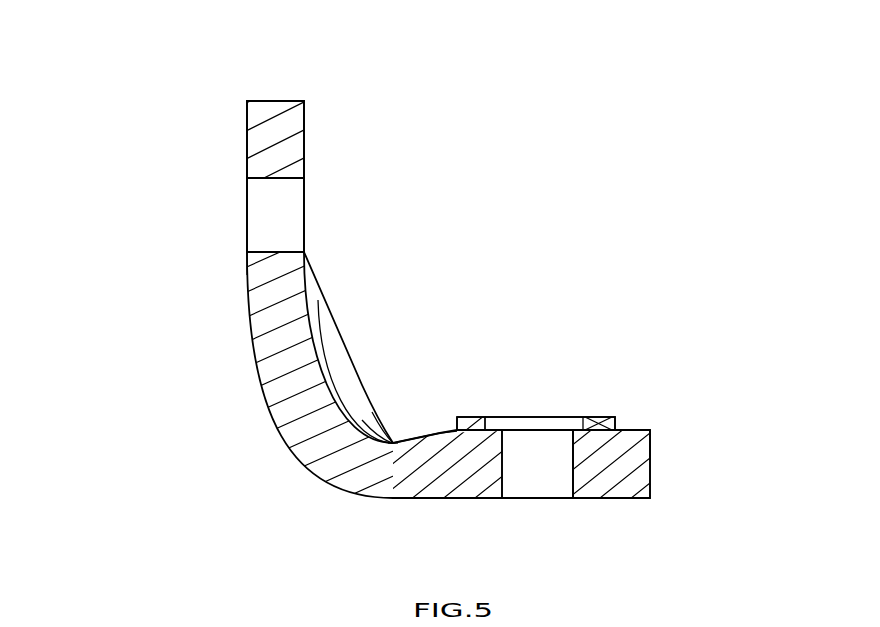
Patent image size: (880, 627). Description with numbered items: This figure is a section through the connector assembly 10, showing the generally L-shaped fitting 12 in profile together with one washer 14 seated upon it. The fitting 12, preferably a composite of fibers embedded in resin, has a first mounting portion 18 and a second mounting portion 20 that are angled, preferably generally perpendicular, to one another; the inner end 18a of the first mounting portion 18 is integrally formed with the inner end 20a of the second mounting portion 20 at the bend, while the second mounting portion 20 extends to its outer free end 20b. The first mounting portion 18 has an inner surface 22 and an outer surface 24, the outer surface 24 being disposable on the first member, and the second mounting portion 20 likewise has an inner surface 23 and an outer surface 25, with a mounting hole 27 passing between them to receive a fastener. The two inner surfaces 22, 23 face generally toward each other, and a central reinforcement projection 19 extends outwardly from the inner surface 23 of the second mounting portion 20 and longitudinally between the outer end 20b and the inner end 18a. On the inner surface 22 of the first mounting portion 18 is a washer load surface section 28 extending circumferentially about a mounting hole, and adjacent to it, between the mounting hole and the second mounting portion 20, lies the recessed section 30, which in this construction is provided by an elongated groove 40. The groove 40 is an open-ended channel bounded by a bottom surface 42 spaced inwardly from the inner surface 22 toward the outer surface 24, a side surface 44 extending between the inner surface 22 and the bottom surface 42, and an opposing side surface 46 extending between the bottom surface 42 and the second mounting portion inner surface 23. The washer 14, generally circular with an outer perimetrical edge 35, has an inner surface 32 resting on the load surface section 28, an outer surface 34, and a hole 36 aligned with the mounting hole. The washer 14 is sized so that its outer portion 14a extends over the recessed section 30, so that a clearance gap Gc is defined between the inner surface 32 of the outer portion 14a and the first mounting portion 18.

The connector assembly 10 is at (637, 236).
The fitting 12 is at (199, 340).
The washer 14 is at (621, 419).
The outer portion of the washer 14a is at (467, 423).
The first mounting portion 18 is at (648, 528).
The inner end of the first mounting portion 18a is at (323, 444).
The central reinforcement projection 19 is at (326, 329).
The second mounting portion 20 is at (208, 164).
The inner end of the second mounting portion 20a is at (316, 414).
The outer free end of the second mounting portion 20b is at (273, 100).
The inner surface of the first mounting portion 22 is at (642, 427).
The inner surface of the second mounting portion 23 is at (308, 156).
The outer surface of the first mounting portion 24 is at (573, 478).
The outer surface of the second mounting portion 25 is at (250, 275).
The mounting hole of the second mounting portion 27 is at (288, 181).
The washer load surface section 28 is at (586, 430).
The recessed section 30 is at (382, 416).
The inner surface of the washer 32 is at (460, 437).
The outer surface of the washer 34 is at (594, 417).
The outer perimetrical edge of the washer 35 is at (455, 431).
The washer hole 36 is at (508, 418).
The groove 40 is at (396, 441).
The bottom surface of the groove 42 is at (433, 442).
The side surface of the groove 44 is at (478, 433).
The opposing side surface of the groove 46 is at (367, 410).
The clearance gap Gc is at (458, 437).